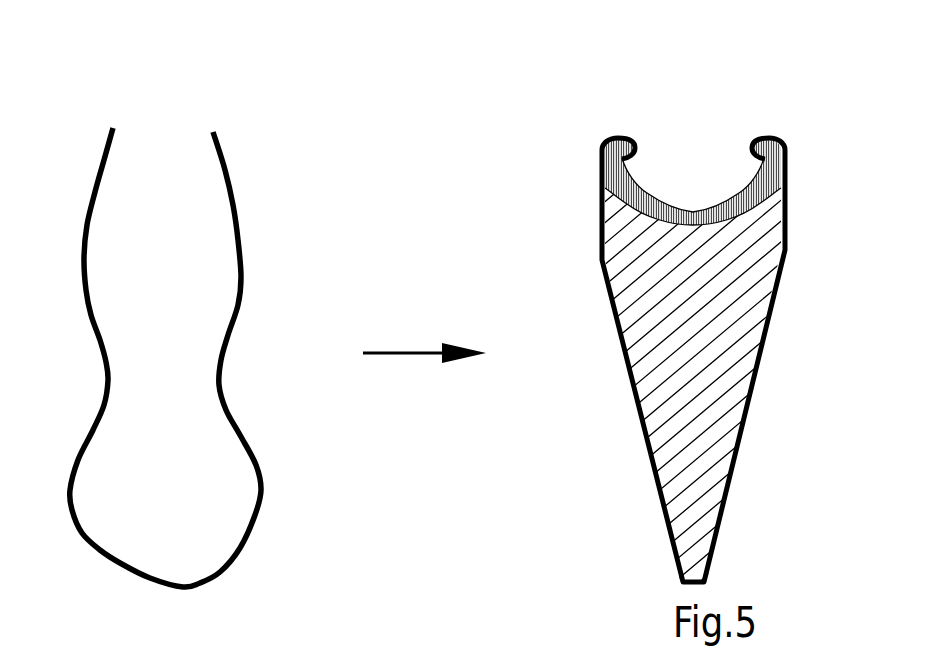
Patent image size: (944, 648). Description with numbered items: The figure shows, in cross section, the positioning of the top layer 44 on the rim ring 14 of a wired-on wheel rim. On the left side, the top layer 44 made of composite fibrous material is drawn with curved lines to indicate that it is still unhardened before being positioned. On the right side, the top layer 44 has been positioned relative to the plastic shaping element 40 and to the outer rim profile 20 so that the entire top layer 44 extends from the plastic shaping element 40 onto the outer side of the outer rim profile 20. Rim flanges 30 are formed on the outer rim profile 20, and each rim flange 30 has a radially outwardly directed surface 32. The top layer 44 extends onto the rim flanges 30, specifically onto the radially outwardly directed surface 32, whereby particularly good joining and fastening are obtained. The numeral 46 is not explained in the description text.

The rim ring 14 is at (696, 332).
The outer rim profile 20 is at (790, 169).
The rim flanges 30 is at (586, 159).
The radially outwardly directed surface 32 is at (639, 125).
The plastic shaping element 40 is at (735, 288).
The top layer 44 is at (100, 540).
The preform 46 is at (227, 644).